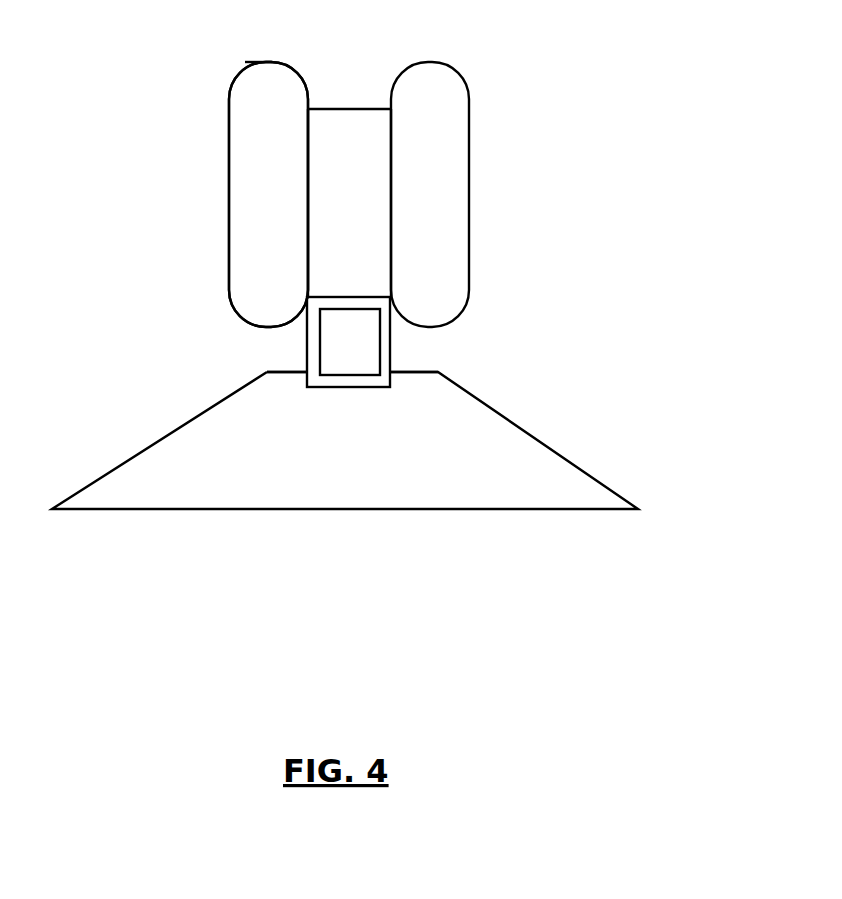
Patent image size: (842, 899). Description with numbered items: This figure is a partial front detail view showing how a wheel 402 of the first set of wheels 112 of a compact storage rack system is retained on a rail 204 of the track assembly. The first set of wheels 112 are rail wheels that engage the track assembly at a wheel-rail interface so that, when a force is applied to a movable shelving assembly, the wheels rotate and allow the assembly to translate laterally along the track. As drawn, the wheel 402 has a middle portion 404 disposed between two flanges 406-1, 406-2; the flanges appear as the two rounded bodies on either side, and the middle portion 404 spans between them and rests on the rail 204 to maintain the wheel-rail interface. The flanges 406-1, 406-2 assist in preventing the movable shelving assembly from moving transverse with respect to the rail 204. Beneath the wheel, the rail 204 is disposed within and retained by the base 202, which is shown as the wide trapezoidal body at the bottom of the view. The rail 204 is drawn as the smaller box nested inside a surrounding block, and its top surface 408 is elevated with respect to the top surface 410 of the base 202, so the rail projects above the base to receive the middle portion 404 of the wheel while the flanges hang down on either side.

The first set of wheels 112 is at (230, 172).
The base 202 is at (186, 448).
The rail 204 is at (385, 348).
The wheel 402 is at (230, 96).
The middle portion 404 is at (349, 108).
The flange 406-1 is at (267, 60).
The flange 406-2 is at (428, 60).
The top surface of the rail 408 is at (325, 296).
The top surface of the base 410 is at (281, 371).